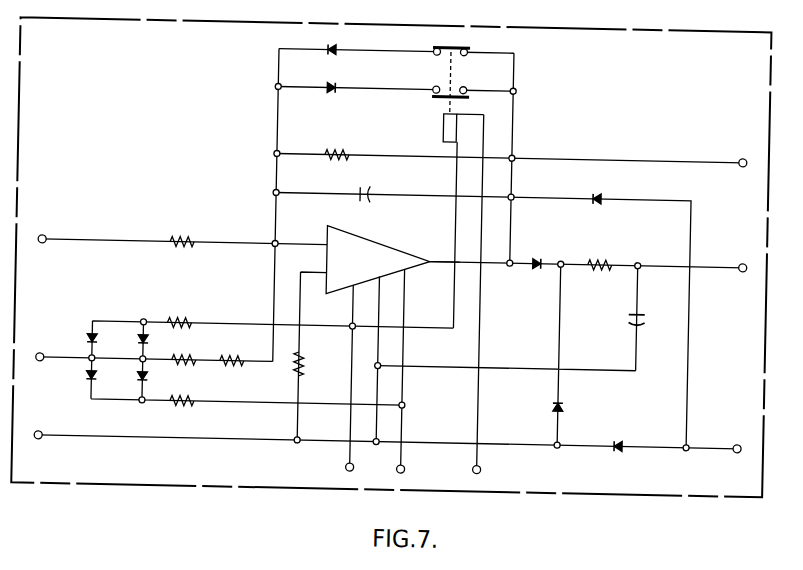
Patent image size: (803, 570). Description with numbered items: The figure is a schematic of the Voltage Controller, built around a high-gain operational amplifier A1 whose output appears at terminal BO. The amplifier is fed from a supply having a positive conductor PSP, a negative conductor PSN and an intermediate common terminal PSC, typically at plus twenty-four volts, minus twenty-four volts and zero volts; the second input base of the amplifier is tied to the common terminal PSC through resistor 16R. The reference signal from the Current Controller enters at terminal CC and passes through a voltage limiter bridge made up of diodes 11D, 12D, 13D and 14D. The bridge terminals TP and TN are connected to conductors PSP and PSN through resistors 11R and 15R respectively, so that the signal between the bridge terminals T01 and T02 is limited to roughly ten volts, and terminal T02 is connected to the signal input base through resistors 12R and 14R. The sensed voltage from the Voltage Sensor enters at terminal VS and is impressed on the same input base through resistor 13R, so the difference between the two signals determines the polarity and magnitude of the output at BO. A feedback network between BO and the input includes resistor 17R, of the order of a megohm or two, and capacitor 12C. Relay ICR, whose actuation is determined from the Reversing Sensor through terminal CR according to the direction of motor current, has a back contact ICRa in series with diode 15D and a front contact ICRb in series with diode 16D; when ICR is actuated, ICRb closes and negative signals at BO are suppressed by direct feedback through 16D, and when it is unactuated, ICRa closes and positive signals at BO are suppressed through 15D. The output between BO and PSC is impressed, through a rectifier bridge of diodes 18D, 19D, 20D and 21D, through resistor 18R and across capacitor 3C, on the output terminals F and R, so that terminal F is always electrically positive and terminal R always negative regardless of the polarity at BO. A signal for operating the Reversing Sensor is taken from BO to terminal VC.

The diode 15D is at (325, 49).
The diode 16D is at (328, 87).
The back contact ICRa is at (466, 48).
The front contact ICRb is at (430, 97).
The relay ICR is at (441, 128).
The resistor 17R is at (328, 154).
The capacitor 12C is at (367, 186).
The reversing sensor signal terminal VC is at (740, 152).
The voltage sensor input terminal VS is at (42, 242).
The resistor 13R is at (172, 241).
The operational amplifier A1 is at (380, 244).
The diode 18D is at (598, 188).
The diode 19D is at (535, 257).
The resistor 18R is at (604, 256).
The output terminal F is at (743, 256).
The amplifier output terminal BO is at (436, 264).
The limiter bridge terminal TP is at (145, 324).
The resistor 11R is at (186, 322).
The diode 11D is at (92, 343).
The current controller input terminal CC is at (40, 361).
The diode 13D is at (142, 347).
The limiter bridge terminal T02 is at (144, 364).
The limiter bridge terminal T01 is at (90, 366).
The resistor 12R is at (180, 361).
The resistor 14R is at (234, 360).
The diode 12D is at (90, 385).
The diode 14D is at (141, 384).
The resistor 15R is at (187, 404).
The limiter bridge terminal TN is at (142, 409).
The common terminal PSC is at (43, 446).
The resistor 16R is at (305, 353).
The positive supply conductor PSP is at (350, 469).
The negative supply conductor PSN is at (409, 472).
The relay control terminal CR is at (485, 471).
The capacitor 3C is at (629, 315).
The diode 20D is at (554, 408).
The diode 21D is at (622, 437).
The output terminal R is at (741, 438).